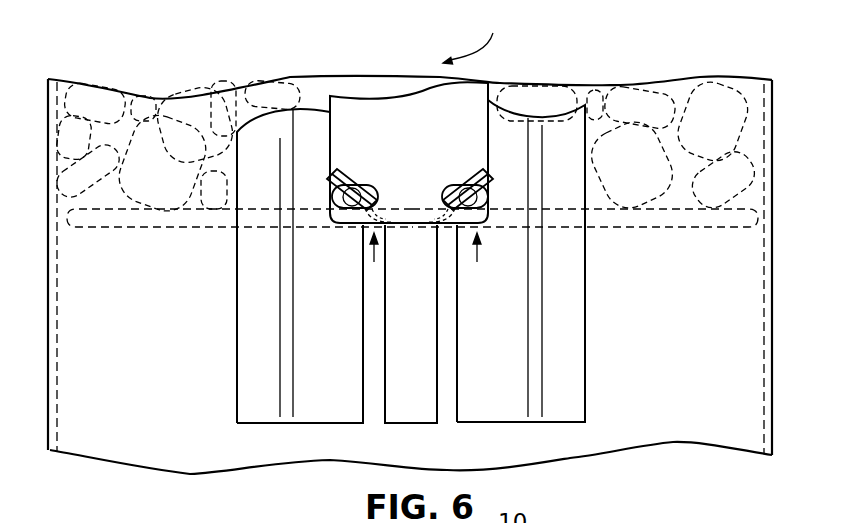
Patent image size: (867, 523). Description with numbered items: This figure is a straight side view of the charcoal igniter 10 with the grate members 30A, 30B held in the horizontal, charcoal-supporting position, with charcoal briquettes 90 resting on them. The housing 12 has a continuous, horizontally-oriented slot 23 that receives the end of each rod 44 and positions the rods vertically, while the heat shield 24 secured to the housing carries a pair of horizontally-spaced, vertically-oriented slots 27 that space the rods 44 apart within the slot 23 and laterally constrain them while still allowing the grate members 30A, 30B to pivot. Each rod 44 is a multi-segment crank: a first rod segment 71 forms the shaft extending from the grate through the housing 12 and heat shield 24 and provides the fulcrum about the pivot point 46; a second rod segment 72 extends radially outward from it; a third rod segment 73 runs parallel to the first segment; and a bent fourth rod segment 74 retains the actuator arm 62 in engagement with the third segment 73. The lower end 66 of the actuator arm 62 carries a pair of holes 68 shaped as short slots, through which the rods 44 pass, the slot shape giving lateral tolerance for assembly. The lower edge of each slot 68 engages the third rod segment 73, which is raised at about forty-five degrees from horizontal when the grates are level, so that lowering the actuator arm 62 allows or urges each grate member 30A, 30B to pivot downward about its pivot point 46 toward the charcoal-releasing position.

The charcoal igniter 10 is at (477, 37).
The housing 12 is at (47, 122).
The slot 23 is at (397, 228).
The heat shield 24 is at (588, 292).
The slots 27 is at (363, 378).
The first grate member 30A is at (100, 229).
The second grate member 30B is at (708, 228).
The rod 44 is at (328, 171).
The second pivot point 46 is at (374, 263).
The actuator arm 62 is at (467, 110).
The lower end 66 is at (477, 252).
The holes 68 is at (446, 200).
The first rod segment 71 is at (397, 208).
The second rod segment 72 is at (348, 208).
The third rod segment 73 is at (347, 177).
The fourth rod segment 74 is at (332, 188).
The charcoal briquettes 90 is at (182, 110).